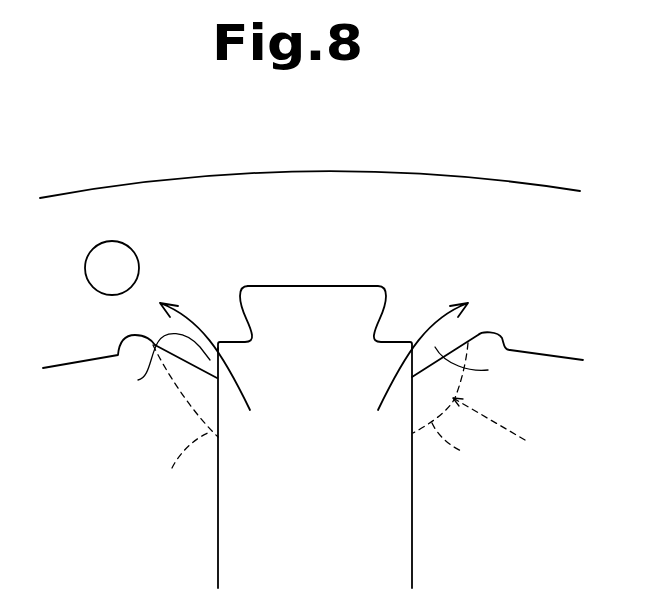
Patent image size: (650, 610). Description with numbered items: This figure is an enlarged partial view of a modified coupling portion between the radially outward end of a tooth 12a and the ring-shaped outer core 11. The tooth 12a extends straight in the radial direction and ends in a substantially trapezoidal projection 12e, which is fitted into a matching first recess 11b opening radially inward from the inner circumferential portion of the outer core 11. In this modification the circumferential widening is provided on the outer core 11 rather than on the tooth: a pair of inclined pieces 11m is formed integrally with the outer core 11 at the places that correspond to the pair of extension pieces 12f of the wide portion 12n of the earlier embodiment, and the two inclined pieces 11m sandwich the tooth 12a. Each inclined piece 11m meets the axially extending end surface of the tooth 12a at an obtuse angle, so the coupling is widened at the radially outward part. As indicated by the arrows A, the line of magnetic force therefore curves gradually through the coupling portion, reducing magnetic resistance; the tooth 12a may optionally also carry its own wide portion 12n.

The outer core 11 is at (264, 178).
The inclined piece 11m is at (313, 367).
The first recess 11b is at (343, 284).
The projection 12e is at (278, 315).
The tooth 12a is at (416, 539).
The extension piece 12f is at (320, 427).
The wide portion 12n is at (518, 431).
The arrow A is at (314, 373).